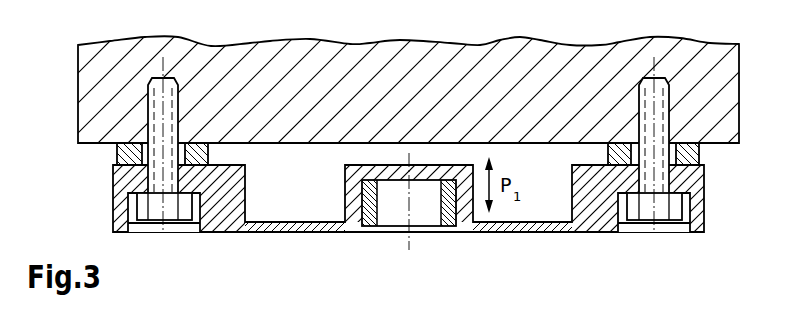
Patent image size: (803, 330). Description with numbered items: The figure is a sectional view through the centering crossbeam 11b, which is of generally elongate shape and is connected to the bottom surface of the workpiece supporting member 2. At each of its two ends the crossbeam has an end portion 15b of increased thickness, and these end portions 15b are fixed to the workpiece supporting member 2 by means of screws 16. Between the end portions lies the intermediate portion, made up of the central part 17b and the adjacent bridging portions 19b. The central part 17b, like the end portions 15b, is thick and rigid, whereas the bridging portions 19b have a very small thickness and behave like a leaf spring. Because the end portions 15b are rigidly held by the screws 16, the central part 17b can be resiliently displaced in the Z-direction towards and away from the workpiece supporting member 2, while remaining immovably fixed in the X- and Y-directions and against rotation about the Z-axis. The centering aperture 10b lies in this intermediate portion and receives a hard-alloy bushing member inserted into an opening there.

The workpiece supporting member 2 is at (397, 67).
The centering crossbeam 11b is at (98, 190).
The screw 16 is at (155, 212).
The end portion 15b is at (222, 205).
The bridging portion 19b is at (300, 226).
The central part 17b is at (357, 210).
The centering aperture 10b is at (422, 205).